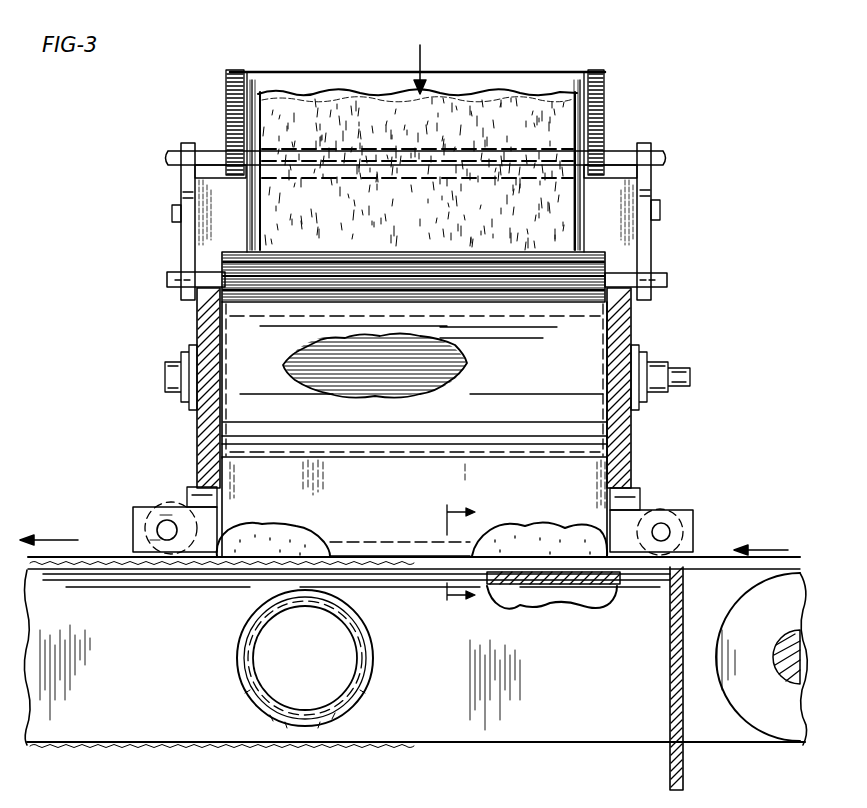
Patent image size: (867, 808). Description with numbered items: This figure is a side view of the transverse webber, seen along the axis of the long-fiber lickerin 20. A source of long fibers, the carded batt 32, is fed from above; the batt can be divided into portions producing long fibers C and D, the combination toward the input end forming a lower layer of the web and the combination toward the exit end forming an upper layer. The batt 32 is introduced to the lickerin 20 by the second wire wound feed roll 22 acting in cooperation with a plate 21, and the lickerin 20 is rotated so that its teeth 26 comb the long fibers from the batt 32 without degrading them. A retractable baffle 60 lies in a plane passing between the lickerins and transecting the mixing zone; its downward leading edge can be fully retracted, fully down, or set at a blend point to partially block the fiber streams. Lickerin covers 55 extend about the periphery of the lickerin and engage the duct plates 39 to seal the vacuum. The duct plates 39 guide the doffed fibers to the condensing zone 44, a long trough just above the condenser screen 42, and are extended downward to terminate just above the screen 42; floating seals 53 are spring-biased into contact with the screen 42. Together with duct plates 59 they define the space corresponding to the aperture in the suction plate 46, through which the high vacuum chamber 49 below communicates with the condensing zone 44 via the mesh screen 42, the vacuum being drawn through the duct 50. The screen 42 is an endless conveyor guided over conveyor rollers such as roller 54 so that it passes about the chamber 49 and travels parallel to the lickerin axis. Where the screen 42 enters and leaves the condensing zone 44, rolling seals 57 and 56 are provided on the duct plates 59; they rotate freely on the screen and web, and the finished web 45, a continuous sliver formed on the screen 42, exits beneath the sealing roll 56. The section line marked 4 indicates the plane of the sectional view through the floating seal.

The long fibers D is at (289, 97).
The long fibers C is at (538, 102).
The carded batt 32 is at (365, 92).
The retractable baffle 60 is at (483, 80).
The plate 21 is at (604, 206).
The second wire wound feed roll 22 is at (234, 250).
The duct plates 59 is at (205, 320).
The lickerin 20 is at (430, 432).
The teeth 26 is at (468, 364).
The lickerin covers 55 is at (248, 424).
The duct plates 39 is at (430, 494).
The sealing roll 56 is at (167, 512).
The sealing roll 57 is at (660, 518).
The web 45 is at (94, 556).
The condensing zone 44 is at (252, 548).
The floating seals 53 is at (406, 580).
The suction plate 46 is at (545, 586).
The high vacuum chamber 49 is at (140, 679).
The duct 50 is at (330, 724).
The condenser screen 42 is at (632, 742).
The conveyor roller 54 is at (770, 738).
The section line 4- 4 is at (450, 557).